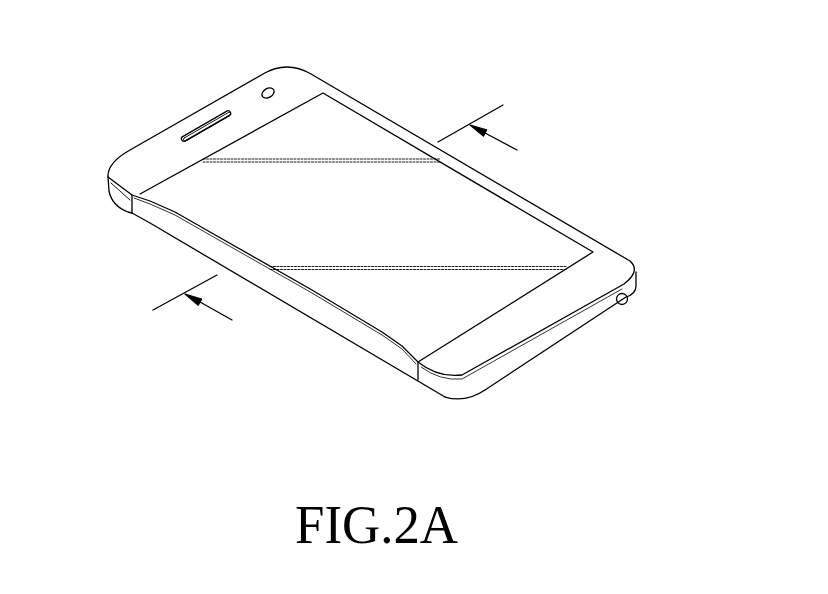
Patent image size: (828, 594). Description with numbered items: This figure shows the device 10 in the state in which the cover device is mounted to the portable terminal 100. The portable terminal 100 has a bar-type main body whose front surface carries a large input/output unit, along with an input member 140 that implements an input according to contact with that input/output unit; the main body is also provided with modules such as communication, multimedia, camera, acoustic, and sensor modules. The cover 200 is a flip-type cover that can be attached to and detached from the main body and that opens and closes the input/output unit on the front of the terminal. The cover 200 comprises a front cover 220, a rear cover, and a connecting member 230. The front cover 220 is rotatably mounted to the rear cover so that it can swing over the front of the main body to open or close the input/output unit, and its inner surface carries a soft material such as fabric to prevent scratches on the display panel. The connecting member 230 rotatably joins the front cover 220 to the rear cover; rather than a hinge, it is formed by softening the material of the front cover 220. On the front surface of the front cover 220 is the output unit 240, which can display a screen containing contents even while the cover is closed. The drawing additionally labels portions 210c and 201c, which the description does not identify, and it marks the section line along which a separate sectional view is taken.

The device 10 is at (123, 62).
The portable terminal 100 is at (553, 336).
The input member 140 is at (627, 305).
The cover device 200 is at (157, 369).
The curved display region 201c is at (373, 138).
The curved window portion 210c is at (298, 88).
The front cover 220 is at (460, 353).
The connecting member 230 is at (347, 330).
The output unit 240 is at (330, 284).